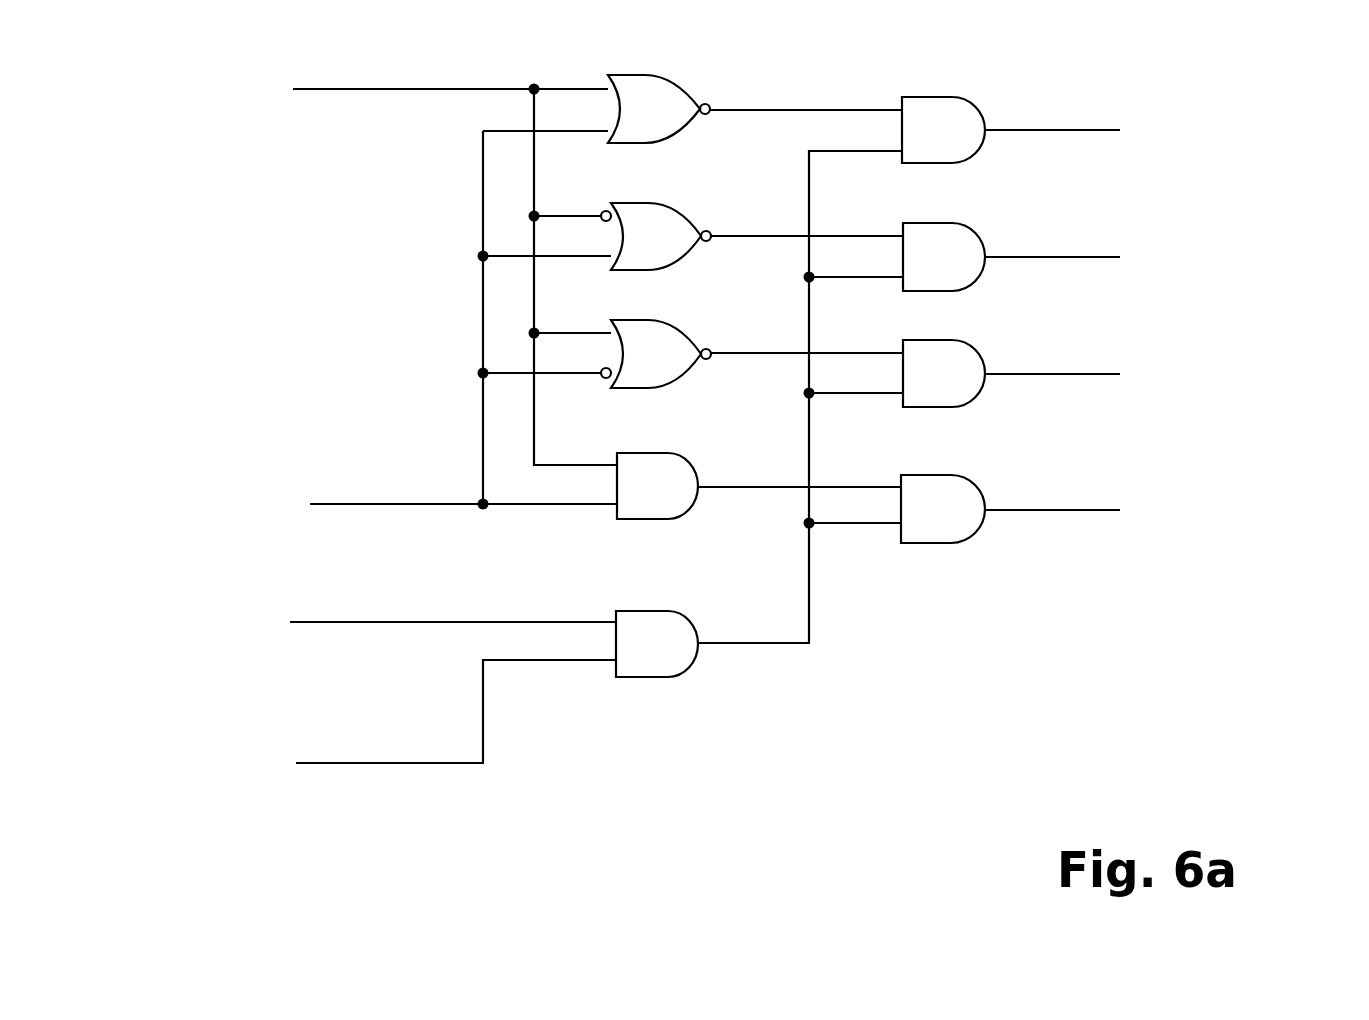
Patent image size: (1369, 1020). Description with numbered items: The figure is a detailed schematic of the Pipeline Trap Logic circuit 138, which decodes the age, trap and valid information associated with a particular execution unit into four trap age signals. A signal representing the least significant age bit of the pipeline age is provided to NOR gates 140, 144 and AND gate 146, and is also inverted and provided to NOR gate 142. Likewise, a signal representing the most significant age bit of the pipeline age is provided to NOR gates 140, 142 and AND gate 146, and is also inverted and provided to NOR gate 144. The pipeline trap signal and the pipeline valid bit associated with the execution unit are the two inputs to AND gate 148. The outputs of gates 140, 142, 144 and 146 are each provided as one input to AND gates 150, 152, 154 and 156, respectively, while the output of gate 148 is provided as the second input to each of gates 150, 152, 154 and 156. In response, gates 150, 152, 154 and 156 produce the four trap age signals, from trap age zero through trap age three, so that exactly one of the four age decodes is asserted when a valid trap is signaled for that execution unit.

The Pipeline Trap Logic circuit 138 is at (903, 685).
The NOR gate 140 is at (652, 76).
The NOR gate 142 is at (646, 201).
The NOR gate 144 is at (646, 318).
The AND gate 146 is at (650, 451).
The AND gate 148 is at (650, 609).
The AND gate 150 is at (930, 95).
The AND gate 152 is at (930, 221).
The AND gate 154 is at (930, 338).
The AND gate 156 is at (930, 473).